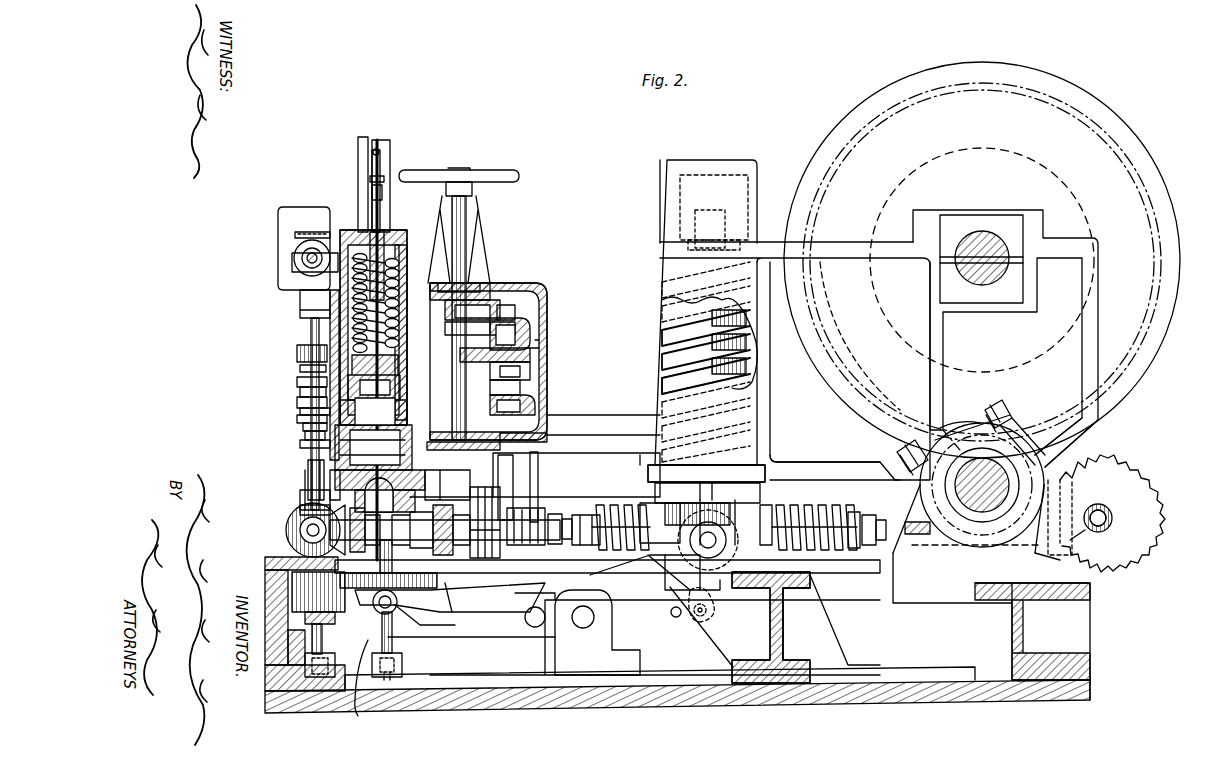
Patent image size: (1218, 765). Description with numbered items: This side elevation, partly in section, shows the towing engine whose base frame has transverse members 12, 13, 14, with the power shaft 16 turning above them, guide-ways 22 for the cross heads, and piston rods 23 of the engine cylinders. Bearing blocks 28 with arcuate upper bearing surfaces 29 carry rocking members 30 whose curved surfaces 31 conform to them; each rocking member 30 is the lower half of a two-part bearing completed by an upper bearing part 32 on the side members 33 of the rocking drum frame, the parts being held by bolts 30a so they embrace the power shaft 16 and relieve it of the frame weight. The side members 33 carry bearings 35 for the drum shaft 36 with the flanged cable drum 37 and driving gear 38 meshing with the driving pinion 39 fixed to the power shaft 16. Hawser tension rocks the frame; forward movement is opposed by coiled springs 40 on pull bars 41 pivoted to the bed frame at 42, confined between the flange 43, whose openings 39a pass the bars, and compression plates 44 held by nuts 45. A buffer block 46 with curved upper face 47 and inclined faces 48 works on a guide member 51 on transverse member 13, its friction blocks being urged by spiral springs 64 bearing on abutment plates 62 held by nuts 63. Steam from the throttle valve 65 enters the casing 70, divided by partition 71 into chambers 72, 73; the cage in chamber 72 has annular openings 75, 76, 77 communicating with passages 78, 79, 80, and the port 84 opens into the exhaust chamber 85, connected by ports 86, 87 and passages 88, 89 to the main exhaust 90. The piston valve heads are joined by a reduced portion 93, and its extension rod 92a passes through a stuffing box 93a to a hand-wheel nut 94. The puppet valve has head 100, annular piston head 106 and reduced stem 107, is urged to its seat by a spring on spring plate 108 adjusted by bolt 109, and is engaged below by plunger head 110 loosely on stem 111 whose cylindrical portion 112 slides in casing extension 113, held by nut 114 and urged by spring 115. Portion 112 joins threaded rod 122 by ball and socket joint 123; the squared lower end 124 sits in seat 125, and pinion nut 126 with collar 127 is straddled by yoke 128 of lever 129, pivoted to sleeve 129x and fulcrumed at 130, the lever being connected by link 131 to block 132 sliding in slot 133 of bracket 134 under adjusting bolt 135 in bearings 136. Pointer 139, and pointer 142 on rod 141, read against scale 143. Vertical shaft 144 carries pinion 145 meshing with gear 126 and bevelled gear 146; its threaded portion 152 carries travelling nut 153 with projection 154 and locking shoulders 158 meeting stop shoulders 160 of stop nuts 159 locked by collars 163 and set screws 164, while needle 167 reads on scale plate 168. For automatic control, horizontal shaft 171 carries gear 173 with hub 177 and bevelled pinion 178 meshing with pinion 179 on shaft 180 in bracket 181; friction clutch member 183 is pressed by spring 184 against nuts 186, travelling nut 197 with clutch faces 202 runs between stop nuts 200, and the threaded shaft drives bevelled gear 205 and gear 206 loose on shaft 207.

The transverse member 12 is at (266, 562).
The transverse member 13 is at (810, 640).
The transverse member 14 is at (1075, 635).
The power shaft 16 is at (1060, 452).
The guide-ways 22 is at (645, 430).
The piston rods 23 is at (585, 466).
The bearing blocks 28 is at (952, 555).
The arcuate upper bearing surfaces 29 is at (1005, 550).
The rocking members 30 is at (1010, 482).
The bolts 30a is at (897, 455).
The curved surfaces 31 is at (978, 560).
The upper bearing part 32 is at (962, 430).
The side members 33 is at (1097, 330).
The alining bearings 35 is at (968, 218).
The drum shaft 36 is at (988, 285).
The flanged cable drum 37 is at (953, 150).
The driving gear 38 is at (1135, 175).
The driving pinion 39 is at (918, 400).
The openings 39a is at (778, 460).
The coiled springs 40 is at (668, 338).
The tension bars 41 is at (668, 358).
The pivotal connection 42 is at (735, 590).
The rearwardly extending projection 43 is at (646, 465).
The compression plates 44 is at (688, 247).
The nuts 45 is at (690, 215).
The block 46 is at (833, 510).
The curved upper face 47 is at (631, 531).
The inwardly inclined faces 48 is at (772, 548).
The guide member 51 is at (790, 590).
The abutment plate 62 is at (566, 573).
The nuts 63 is at (872, 545).
The spiral spring 64 is at (858, 550).
The throttle valve 65 is at (645, 572).
The casing 70 is at (540, 292).
The vertical partition 71 is at (420, 275).
The cylindrical chamber 72 is at (555, 318).
The cylindrical chamber 73 is at (300, 302).
The upper annular openings 75 is at (530, 334).
The lower annular openings 76 is at (540, 415).
The intermediate annular openings 77 is at (540, 366).
The annular passage 78 is at (515, 315).
The annular passage 79 is at (530, 404).
The annular passage 80 is at (550, 392).
The port 84 is at (428, 480).
The exhaust chamber 85 is at (548, 442).
The ports 86 is at (497, 285).
The ports 87 is at (513, 482).
The passage 88 is at (468, 262).
The passage 89 is at (470, 480).
The main exhaust connection 90 is at (538, 348).
The extension rod 92a is at (470, 240).
The reduced portion 93 is at (495, 352).
The stuffing box 93a is at (485, 262).
The hand-wheel nut 94 is at (472, 188).
The puppet valve head 100 is at (372, 420).
The annular piston head 106 is at (365, 440).
The reduced stem 107 is at (420, 270).
The spring plate 108 is at (418, 240).
The adjusting bolt 109 is at (448, 200).
The plunger head 110 is at (308, 465).
The stem 111 is at (300, 498).
The enlarged cylindrical portion 112 is at (300, 512).
The casing extension 113 is at (433, 510).
The holding nut 114 is at (310, 475).
The expansion spiral spring 115 is at (330, 480).
The threaded rod 122 is at (392, 554).
The ball and socket joint 123 is at (348, 510).
The squared lower end 124 is at (402, 656).
The seat 125 is at (400, 667).
The pinion nut 126 is at (455, 603).
The collar 127 is at (380, 612).
The yoke 128 is at (440, 623).
The lever 129 is at (520, 640).
The sleeve 129x is at (346, 685).
The fulcrum 130 is at (590, 620).
The link 131 is at (710, 612).
The block 132 is at (716, 548).
The slot 133 is at (706, 482).
The bracket 134 is at (692, 572).
The adjusting bolt 135 is at (665, 505).
The bearings 136 is at (670, 607).
The pointer 139 is at (370, 180).
The rod 141 is at (762, 490).
The pointer 142 is at (372, 158).
The scale 143 is at (358, 150).
The vertical shaft 144 is at (300, 505).
The pinion 145 is at (300, 588).
The bevelled gear 146 is at (340, 240).
The threaded portion 152 is at (300, 340).
The travelling nut 153 is at (305, 434).
The projection 154 is at (300, 442).
The locking shoulders 158 is at (297, 400).
The stop nuts 159 is at (300, 390).
The stop shoulder 160 is at (297, 380).
The locking collars 163 is at (300, 366).
The set screws 164 is at (310, 332).
The indicator needle 167 is at (302, 232).
The scale plate 168 is at (285, 208).
The horizontal shaft 171 is at (1110, 512).
The gear 173 is at (1125, 565).
The hub 177 is at (295, 256).
The bevelled pinion 178 is at (301, 258).
The bevelled pinion 179 is at (1090, 535).
The shaft 180 is at (600, 520).
The bracket 181 is at (1060, 570).
The friction clutch member 183 is at (525, 548).
The expansion spring 184 is at (500, 545).
The holding nuts 186 is at (545, 495).
The travelling nut 197 is at (414, 495).
The stop nuts 200 is at (475, 573).
The clutch faces 202 is at (407, 530).
The bevelled gear 205 is at (305, 660).
The bevelled gear 206 is at (292, 582).
The shaft 207 is at (290, 540).